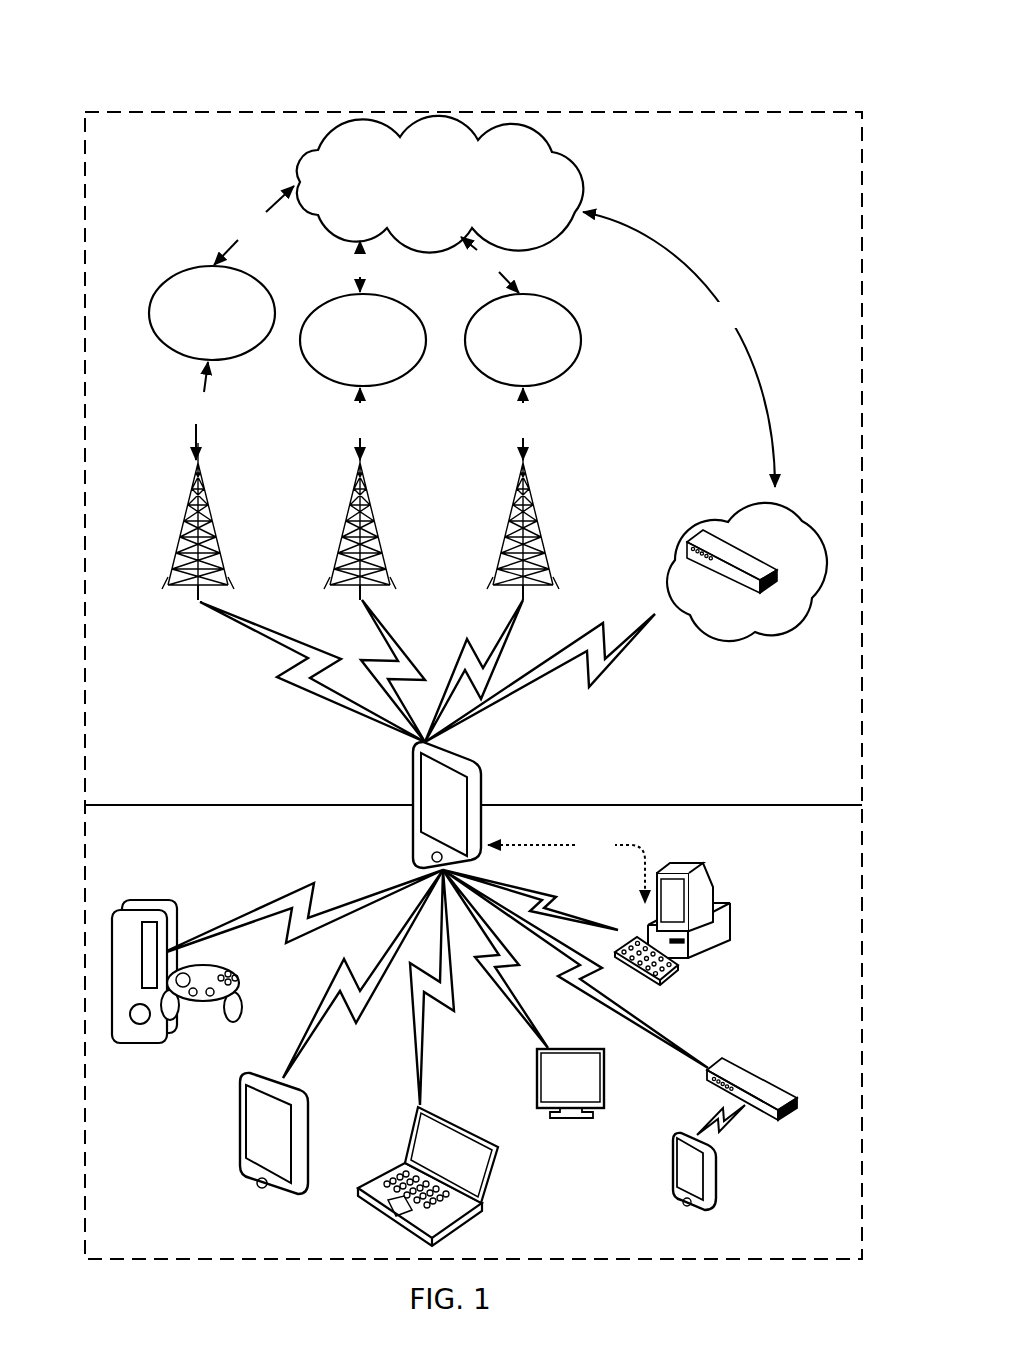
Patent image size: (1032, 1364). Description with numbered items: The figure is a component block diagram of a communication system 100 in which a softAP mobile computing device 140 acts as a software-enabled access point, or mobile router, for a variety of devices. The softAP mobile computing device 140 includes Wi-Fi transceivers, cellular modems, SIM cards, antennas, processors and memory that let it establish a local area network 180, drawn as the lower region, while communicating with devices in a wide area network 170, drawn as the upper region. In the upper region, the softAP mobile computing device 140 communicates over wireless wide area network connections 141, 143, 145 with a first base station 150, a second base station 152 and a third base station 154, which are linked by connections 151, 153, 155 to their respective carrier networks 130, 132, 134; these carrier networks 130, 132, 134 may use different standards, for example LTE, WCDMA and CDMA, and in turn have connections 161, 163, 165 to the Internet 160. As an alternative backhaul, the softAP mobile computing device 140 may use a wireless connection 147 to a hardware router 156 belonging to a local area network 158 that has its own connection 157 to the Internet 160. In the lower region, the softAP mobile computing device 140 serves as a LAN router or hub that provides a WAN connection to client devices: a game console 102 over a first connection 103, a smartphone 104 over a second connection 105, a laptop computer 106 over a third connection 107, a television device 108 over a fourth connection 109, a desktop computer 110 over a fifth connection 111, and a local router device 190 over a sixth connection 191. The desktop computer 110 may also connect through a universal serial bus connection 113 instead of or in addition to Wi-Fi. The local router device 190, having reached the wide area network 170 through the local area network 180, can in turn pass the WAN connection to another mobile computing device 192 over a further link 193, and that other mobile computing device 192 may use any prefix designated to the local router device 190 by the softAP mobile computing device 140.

The communication system 100 is at (812, 88).
The game console 102 is at (157, 1047).
The first connection 103 is at (302, 912).
The smartphone 104 is at (273, 1205).
The second connection 105 is at (335, 1010).
The laptop computer 106 is at (378, 1217).
The third connection 107 is at (422, 1077).
The television device 108 is at (568, 1118).
The fourth connection 109 is at (515, 985).
The desktop computer 110 is at (678, 870).
The fifth connection 111 is at (548, 900).
The universal serial bus connection 113 is at (578, 854).
The carrier network 130 is at (196, 349).
The carrier network 132 is at (347, 376).
The carrier network 134 is at (507, 376).
The softAP mobile computing device 140 is at (484, 818).
The wireless wide area network connection 141 is at (312, 672).
The wireless wide area network connection 143 is at (393, 670).
The wireless wide area network connection 145 is at (475, 668).
The wireless connection 147 is at (598, 660).
The first base station 150 is at (210, 607).
The connection 151 is at (178, 420).
The second base station 152 is at (372, 607).
The connection 153 is at (343, 434).
The third base station 154 is at (536, 607).
The connection 155 is at (510, 434).
The hardware router 156 is at (752, 556).
The connection 157 is at (707, 325).
The local area network 158 is at (767, 641).
The Internet 160 is at (420, 209).
The connection 161 is at (236, 232).
The connection 163 is at (345, 274).
The connection 165 is at (478, 272).
The wide area network 170 is at (848, 789).
The local area network 180 is at (848, 1255).
The local router device 190 is at (727, 1063).
The sixth connection 191 is at (657, 1029).
The other mobile computing device 192 is at (716, 1197).
The wireless link 193 is at (723, 1128).